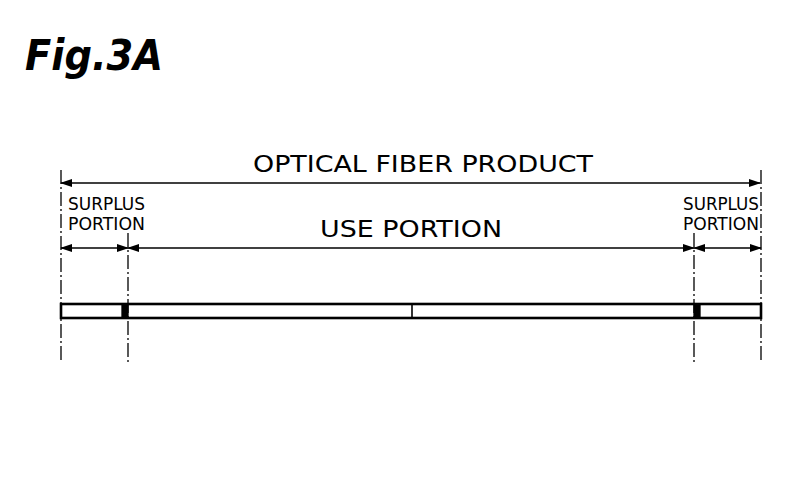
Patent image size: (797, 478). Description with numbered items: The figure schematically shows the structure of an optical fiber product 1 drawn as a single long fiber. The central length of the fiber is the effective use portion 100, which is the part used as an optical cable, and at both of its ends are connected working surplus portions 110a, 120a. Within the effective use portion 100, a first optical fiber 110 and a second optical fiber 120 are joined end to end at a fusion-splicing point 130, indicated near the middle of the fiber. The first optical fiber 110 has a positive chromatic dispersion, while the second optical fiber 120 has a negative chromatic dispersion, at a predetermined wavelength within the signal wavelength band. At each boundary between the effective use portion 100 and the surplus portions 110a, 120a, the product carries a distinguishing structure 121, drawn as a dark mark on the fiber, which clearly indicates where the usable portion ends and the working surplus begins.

The optical fiber product 1 is at (649, 149).
The effective use portion 100 is at (560, 390).
The first optical fiber 110 is at (285, 321).
The second optical fiber 120 is at (537, 321).
The fusion-splicing point 130 is at (412, 322).
The distinguishing structure 121 is at (123, 304).
The working surplus portion 110a is at (120, 346).
The working surplus portion 120a is at (758, 346).